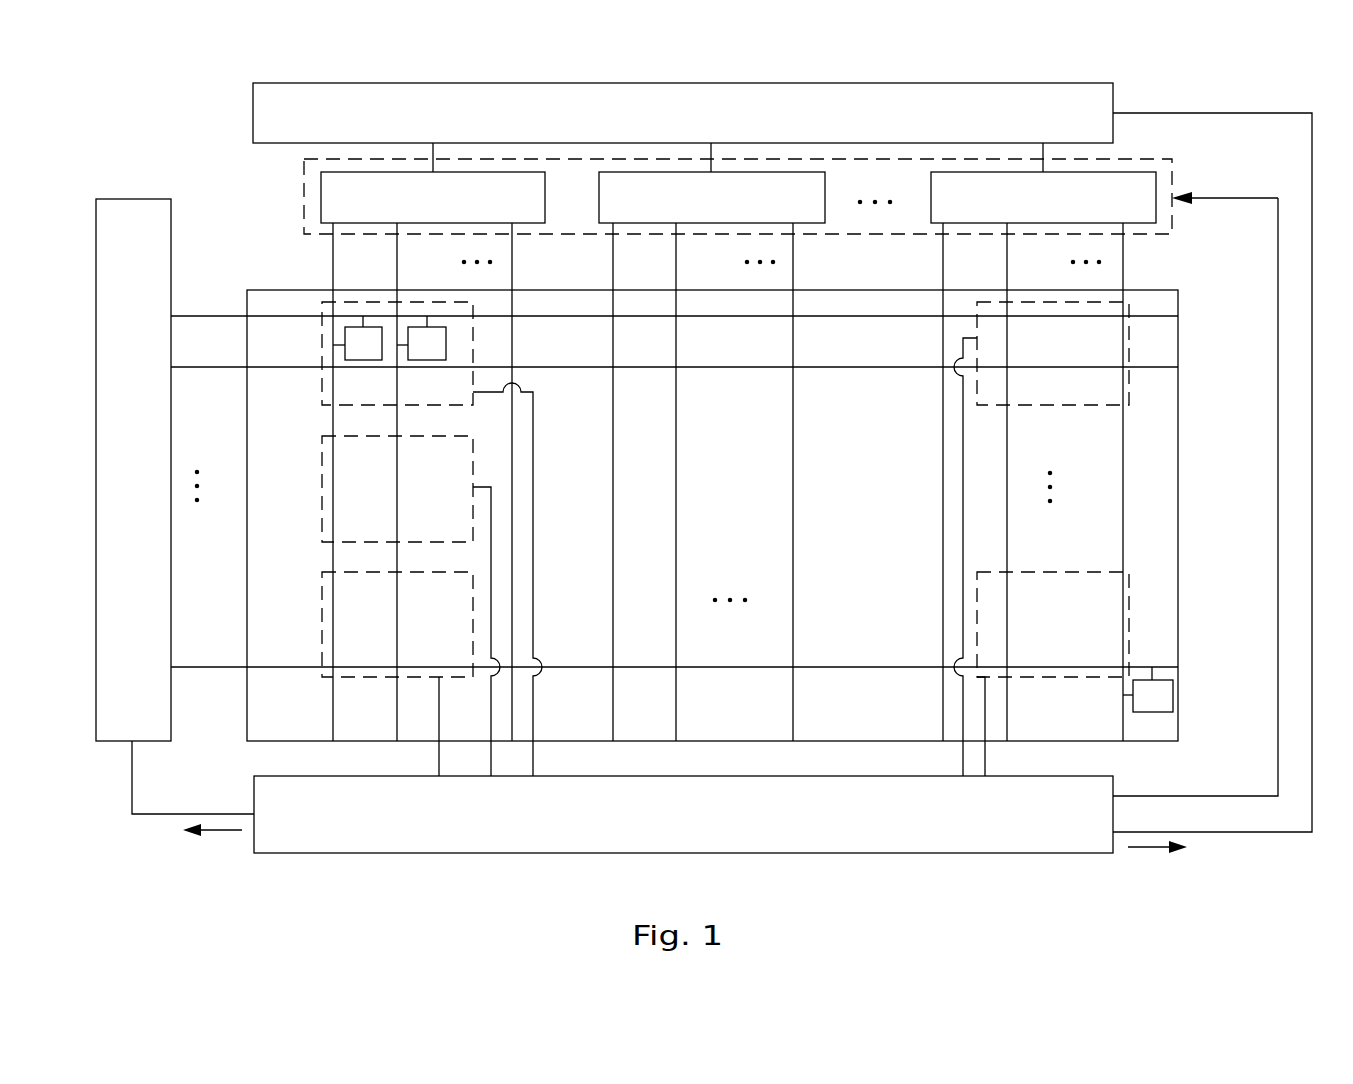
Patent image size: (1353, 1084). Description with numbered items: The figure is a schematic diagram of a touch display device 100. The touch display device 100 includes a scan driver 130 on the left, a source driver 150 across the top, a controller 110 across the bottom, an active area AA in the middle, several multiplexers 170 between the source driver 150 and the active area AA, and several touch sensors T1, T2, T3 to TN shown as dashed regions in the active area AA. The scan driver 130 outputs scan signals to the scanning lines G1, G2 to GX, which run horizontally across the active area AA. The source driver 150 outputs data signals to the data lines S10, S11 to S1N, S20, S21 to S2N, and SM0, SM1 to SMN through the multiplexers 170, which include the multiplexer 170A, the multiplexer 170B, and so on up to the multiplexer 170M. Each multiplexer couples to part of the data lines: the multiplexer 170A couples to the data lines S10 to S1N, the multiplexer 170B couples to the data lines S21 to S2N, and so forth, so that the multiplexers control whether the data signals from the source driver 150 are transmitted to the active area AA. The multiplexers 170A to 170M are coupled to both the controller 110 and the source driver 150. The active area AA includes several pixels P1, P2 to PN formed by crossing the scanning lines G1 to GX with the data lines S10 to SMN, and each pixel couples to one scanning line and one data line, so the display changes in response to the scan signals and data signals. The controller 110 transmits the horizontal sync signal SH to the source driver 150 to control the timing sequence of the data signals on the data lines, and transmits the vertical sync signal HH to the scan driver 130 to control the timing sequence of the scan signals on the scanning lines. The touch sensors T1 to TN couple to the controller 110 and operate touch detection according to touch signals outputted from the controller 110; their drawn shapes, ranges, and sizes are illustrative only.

The touch display device 100 is at (135, 77).
The controller 110 is at (903, 853).
The scan driver 130 is at (132, 199).
The source driver 150 is at (960, 83).
The multiplexers 170 is at (1172, 182).
The multiplexer 170A is at (433, 197).
The multiplexer 170B is at (712, 197).
The multiplexer 170M is at (1043, 197).
The active area AA is at (1180, 485).
The scanning line G1 is at (674, 300).
The scanning line G2 is at (674, 350).
The scanning line GX is at (674, 650).
The data line S10 is at (358, 482).
The data line S11 is at (444, 482).
The data line S1N is at (539, 482).
The data line S20 is at (638, 482).
The data line S21 is at (725, 482).
The data line S2N is at (820, 482).
The data line SM0 is at (971, 482).
The data line SM1 is at (1054, 482).
The data line SMN is at (1154, 482).
The touch sensor T1 is at (322, 383).
The touch sensor T2 is at (322, 483).
The touch sensor T3 is at (322, 620).
The touch sensor TN is at (1130, 624).
The pixel P1 is at (357, 338).
The pixel P2 is at (421, 338).
The pixel PN is at (1148, 690).
The vertical sync signal HH is at (212, 846).
The horizontal sync signal SH is at (1157, 864).